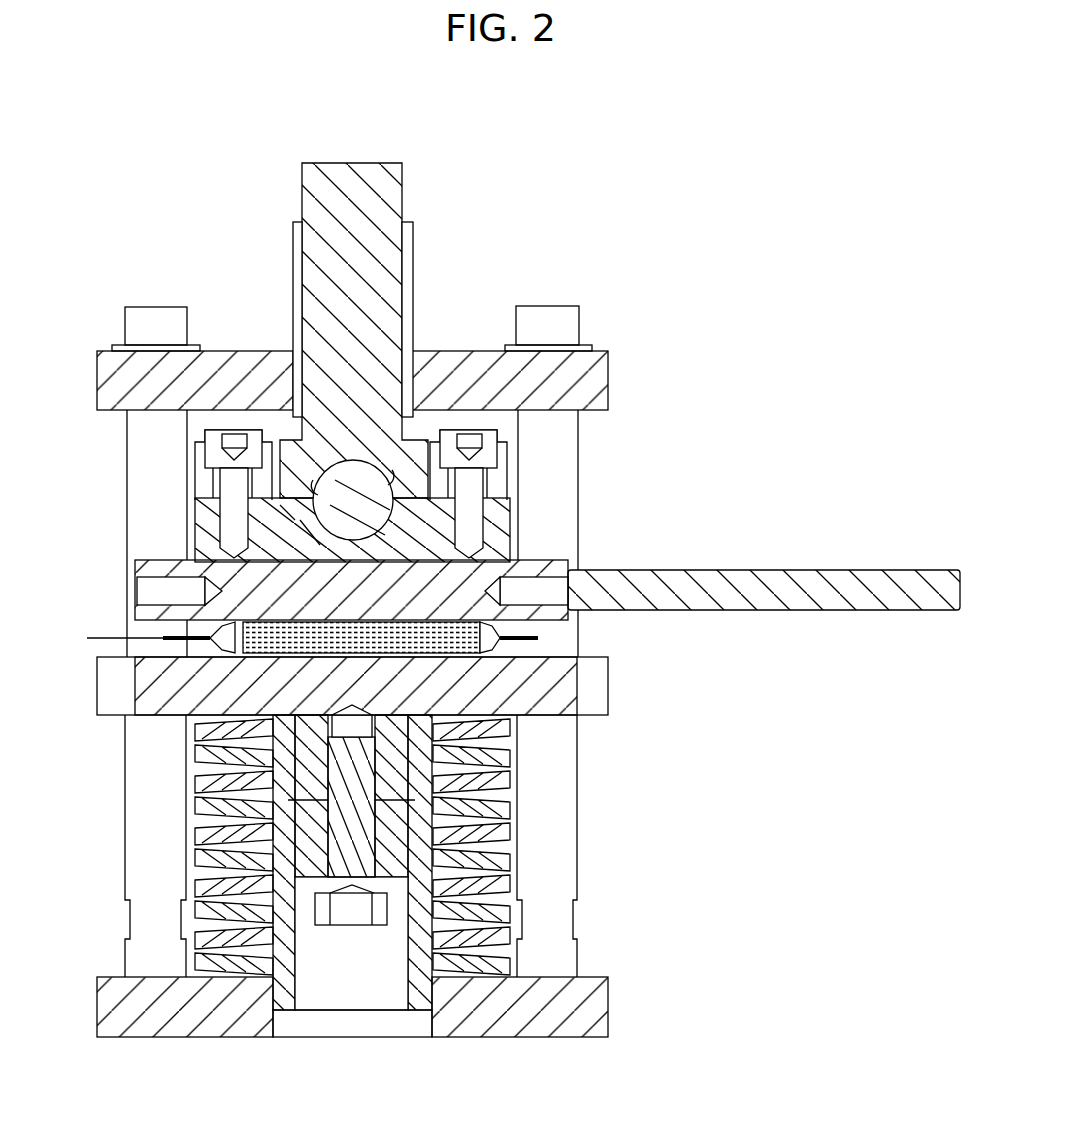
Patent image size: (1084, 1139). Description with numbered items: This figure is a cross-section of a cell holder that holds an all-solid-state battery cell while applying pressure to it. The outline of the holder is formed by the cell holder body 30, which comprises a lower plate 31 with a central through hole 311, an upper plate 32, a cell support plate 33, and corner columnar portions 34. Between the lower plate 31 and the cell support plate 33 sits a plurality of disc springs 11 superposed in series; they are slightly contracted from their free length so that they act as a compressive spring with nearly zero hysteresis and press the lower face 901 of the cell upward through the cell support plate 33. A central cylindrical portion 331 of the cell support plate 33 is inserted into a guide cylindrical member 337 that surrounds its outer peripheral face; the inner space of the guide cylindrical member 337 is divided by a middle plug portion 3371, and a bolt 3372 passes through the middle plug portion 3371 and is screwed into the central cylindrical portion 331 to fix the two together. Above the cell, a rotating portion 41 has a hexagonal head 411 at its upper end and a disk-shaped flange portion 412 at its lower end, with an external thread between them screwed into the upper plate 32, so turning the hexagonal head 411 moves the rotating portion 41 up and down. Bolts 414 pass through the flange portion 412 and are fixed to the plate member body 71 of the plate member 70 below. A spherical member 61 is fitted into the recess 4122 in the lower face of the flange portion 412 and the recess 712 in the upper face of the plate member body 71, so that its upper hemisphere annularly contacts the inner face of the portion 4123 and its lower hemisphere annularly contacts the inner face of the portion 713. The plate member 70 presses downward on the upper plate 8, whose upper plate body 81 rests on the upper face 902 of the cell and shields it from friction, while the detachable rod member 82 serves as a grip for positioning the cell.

The rotating portion 41 is at (465, 302).
The hexagonal head 411 is at (388, 190).
The bolts 414 is at (240, 433).
The portion of the flange portion forming the recess 4123 is at (303, 476).
The recess 4122 is at (313, 487).
The spherical member 61 is at (365, 478).
The cell holder body 30 is at (385, 664).
The upper plate 32 is at (608, 367).
The portion of the plate member body forming the recess 713 is at (290, 508).
The flange portion 412 is at (508, 478).
The plate member 70 is at (370, 398).
The plate member body 71 is at (498, 517).
The upper plate 8 is at (547, 565).
The rod member 82 is at (868, 572).
The recess 712 is at (310, 503).
The upper face 902 is at (267, 620).
The upper plate body 81 is at (467, 610).
The lower face 901 is at (282, 660).
The cell support plate 33 is at (607, 688).
The corner columnar portions 34 is at (118, 799).
The central cylindrical portion 331 is at (483, 903).
The middle plug portion 3371 is at (413, 845).
The disc springs 11 is at (508, 967).
The lower plate 31 is at (607, 995).
The guide cylindrical member 337 is at (272, 1000).
The bolt 3372 is at (380, 930).
The central through hole 311 is at (427, 1015).